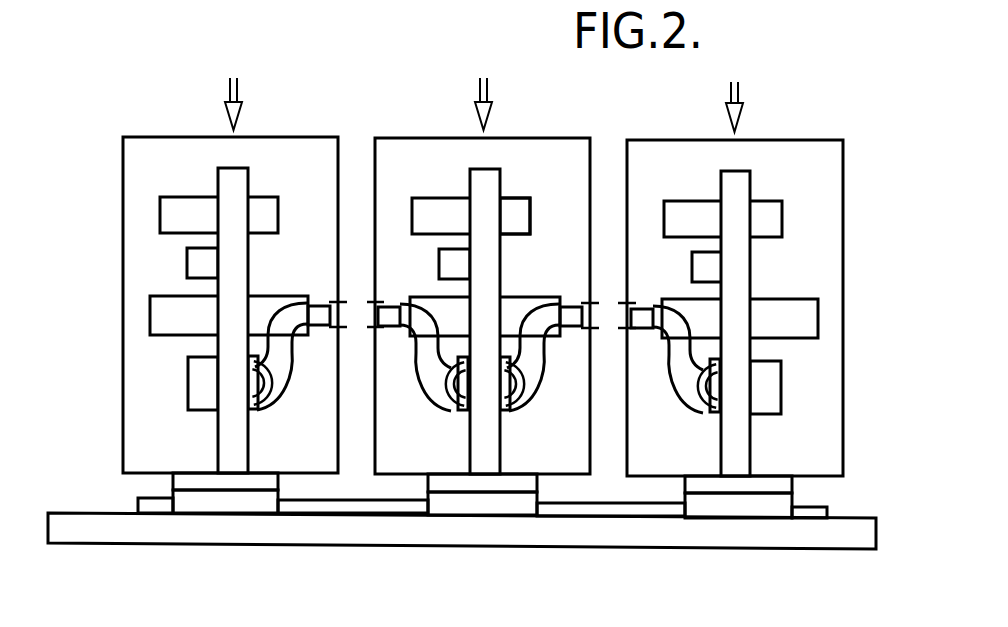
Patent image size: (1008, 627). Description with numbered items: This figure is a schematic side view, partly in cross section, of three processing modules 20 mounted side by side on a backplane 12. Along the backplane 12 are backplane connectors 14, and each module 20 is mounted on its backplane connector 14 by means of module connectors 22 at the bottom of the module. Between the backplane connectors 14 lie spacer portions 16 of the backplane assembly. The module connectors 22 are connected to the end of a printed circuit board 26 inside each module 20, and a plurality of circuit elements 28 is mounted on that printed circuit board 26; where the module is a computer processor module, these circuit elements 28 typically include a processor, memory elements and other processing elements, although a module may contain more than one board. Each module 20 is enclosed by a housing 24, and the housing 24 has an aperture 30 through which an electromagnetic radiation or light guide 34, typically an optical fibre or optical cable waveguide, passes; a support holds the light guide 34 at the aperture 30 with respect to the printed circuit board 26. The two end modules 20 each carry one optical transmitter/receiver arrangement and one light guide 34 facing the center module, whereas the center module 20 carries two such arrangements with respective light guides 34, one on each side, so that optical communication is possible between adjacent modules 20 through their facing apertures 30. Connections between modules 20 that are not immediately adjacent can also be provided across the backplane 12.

The backplane 12 is at (810, 535).
The backplane connectors 14 is at (240, 503).
The spacer 16 is at (372, 505).
The module 20 is at (482, 82).
The module connectors 22 is at (283, 485).
The housing 24 is at (187, 137).
The printed circuit board 26 is at (217, 437).
The circuit elements 28 is at (200, 263).
The aperture 30 is at (347, 312).
The light guide 34 is at (285, 383).